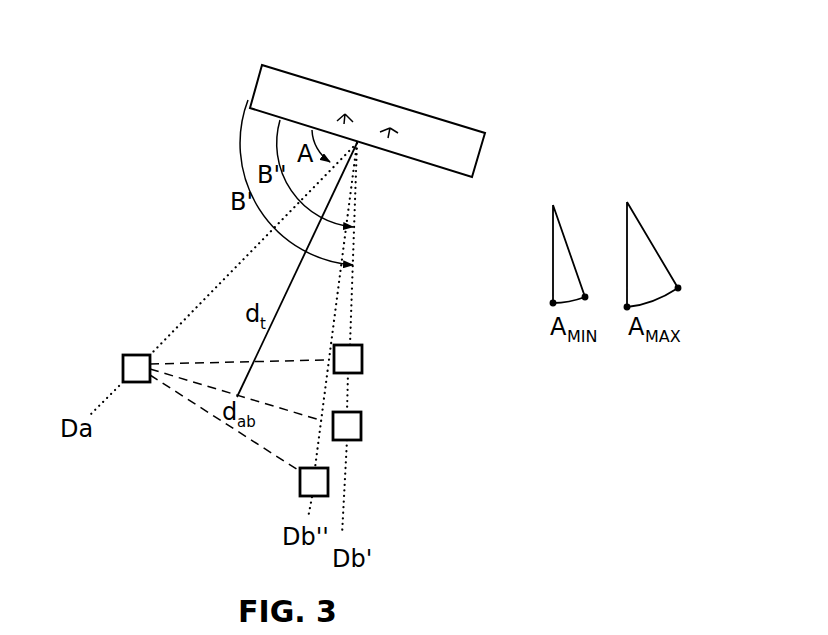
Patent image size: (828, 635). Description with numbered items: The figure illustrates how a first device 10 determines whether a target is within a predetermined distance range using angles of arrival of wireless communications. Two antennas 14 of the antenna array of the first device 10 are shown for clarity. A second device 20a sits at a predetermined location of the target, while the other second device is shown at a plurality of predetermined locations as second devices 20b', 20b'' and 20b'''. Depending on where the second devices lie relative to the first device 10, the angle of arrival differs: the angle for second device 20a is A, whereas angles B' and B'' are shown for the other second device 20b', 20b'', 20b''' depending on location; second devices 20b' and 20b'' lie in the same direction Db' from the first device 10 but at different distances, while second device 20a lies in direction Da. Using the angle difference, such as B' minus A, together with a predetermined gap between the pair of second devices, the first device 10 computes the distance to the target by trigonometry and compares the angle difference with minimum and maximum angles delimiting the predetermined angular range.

The first device 10 is at (261, 80).
The antennas 14 is at (390, 128).
The second device 20a is at (132, 357).
The second device at first predetermined location 20b' is at (386, 340).
The second device at second predetermined location 20b'' is at (383, 415).
The second device at third predetermined location 20b''' is at (257, 498).